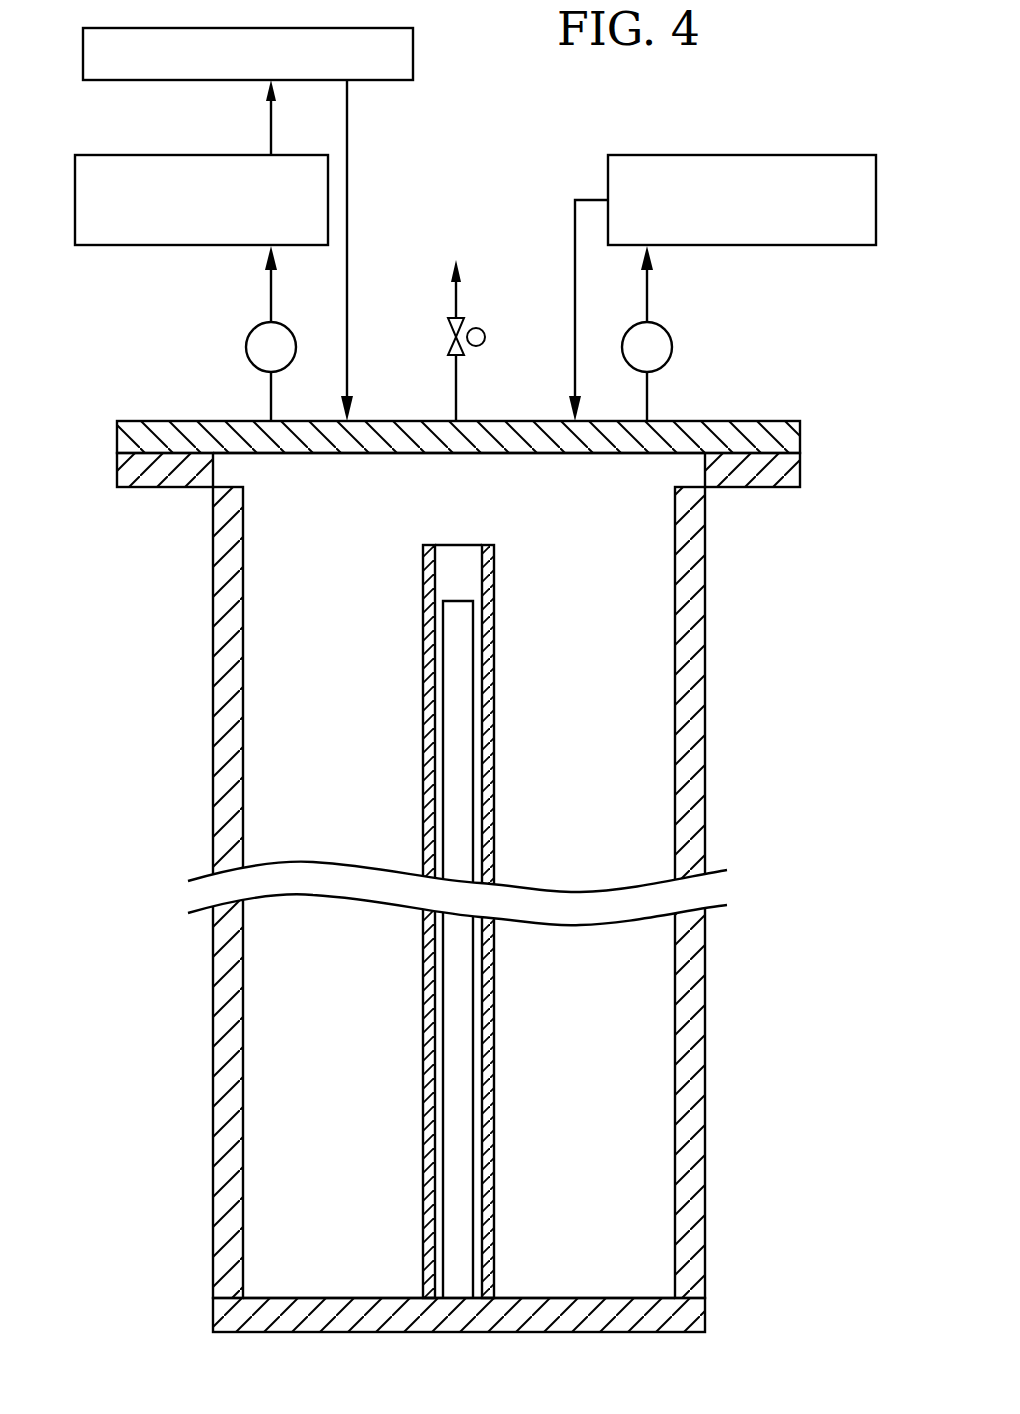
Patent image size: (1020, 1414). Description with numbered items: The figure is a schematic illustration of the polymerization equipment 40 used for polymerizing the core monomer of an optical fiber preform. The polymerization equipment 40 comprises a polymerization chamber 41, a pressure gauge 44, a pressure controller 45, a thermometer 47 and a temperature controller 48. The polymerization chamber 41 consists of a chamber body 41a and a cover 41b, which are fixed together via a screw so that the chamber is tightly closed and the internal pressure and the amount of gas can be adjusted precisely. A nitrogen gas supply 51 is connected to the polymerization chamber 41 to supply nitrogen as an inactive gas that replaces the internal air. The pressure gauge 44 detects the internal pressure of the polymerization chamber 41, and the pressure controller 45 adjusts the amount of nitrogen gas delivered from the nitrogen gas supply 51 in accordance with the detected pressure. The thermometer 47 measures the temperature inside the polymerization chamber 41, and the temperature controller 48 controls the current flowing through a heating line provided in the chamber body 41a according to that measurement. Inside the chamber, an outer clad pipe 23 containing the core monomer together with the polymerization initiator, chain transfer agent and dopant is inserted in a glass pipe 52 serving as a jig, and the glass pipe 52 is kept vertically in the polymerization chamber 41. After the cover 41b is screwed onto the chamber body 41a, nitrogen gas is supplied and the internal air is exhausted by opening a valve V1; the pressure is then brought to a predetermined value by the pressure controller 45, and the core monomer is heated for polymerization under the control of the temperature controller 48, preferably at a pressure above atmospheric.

The polymerization equipment 40 is at (740, 1154).
The polymerization chamber 41 is at (204, 751).
The chamber body 41a is at (213, 660).
The cover 41b is at (158, 421).
The pressure gauge 44 is at (246, 347).
The pressure controller 45 is at (113, 245).
The thermometer 47 is at (672, 345).
The temperature controller 48 is at (832, 245).
The nitrogen gas supply 51 is at (413, 56).
The glass pipe 52 is at (495, 647).
The outer clad pipe 23 is at (477, 737).
The valve V1 is at (481, 330).